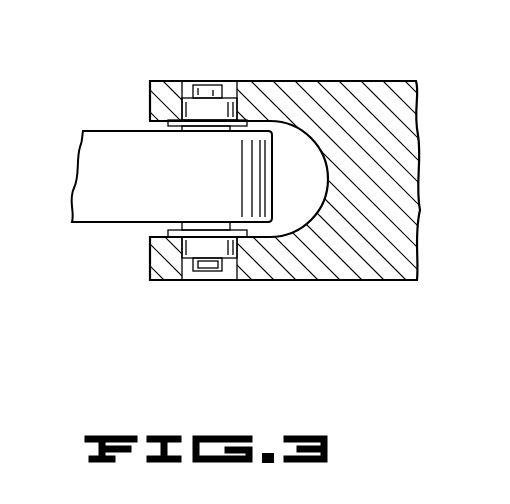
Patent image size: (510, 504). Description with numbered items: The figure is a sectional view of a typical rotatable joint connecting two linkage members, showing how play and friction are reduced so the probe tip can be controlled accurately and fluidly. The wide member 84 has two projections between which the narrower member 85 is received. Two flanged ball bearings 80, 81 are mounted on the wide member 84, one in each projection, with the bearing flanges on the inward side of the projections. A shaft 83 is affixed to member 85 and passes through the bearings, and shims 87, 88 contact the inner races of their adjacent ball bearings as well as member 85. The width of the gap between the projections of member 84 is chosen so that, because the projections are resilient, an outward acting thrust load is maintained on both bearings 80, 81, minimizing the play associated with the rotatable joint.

The flanged ball bearing 80 is at (182, 279).
The flanged ball bearing 81 is at (230, 87).
The shaft 83 is at (200, 83).
The wide member 84 is at (351, 281).
The member 85 is at (100, 225).
The shim 87 is at (193, 225).
The shim 88 is at (193, 131).